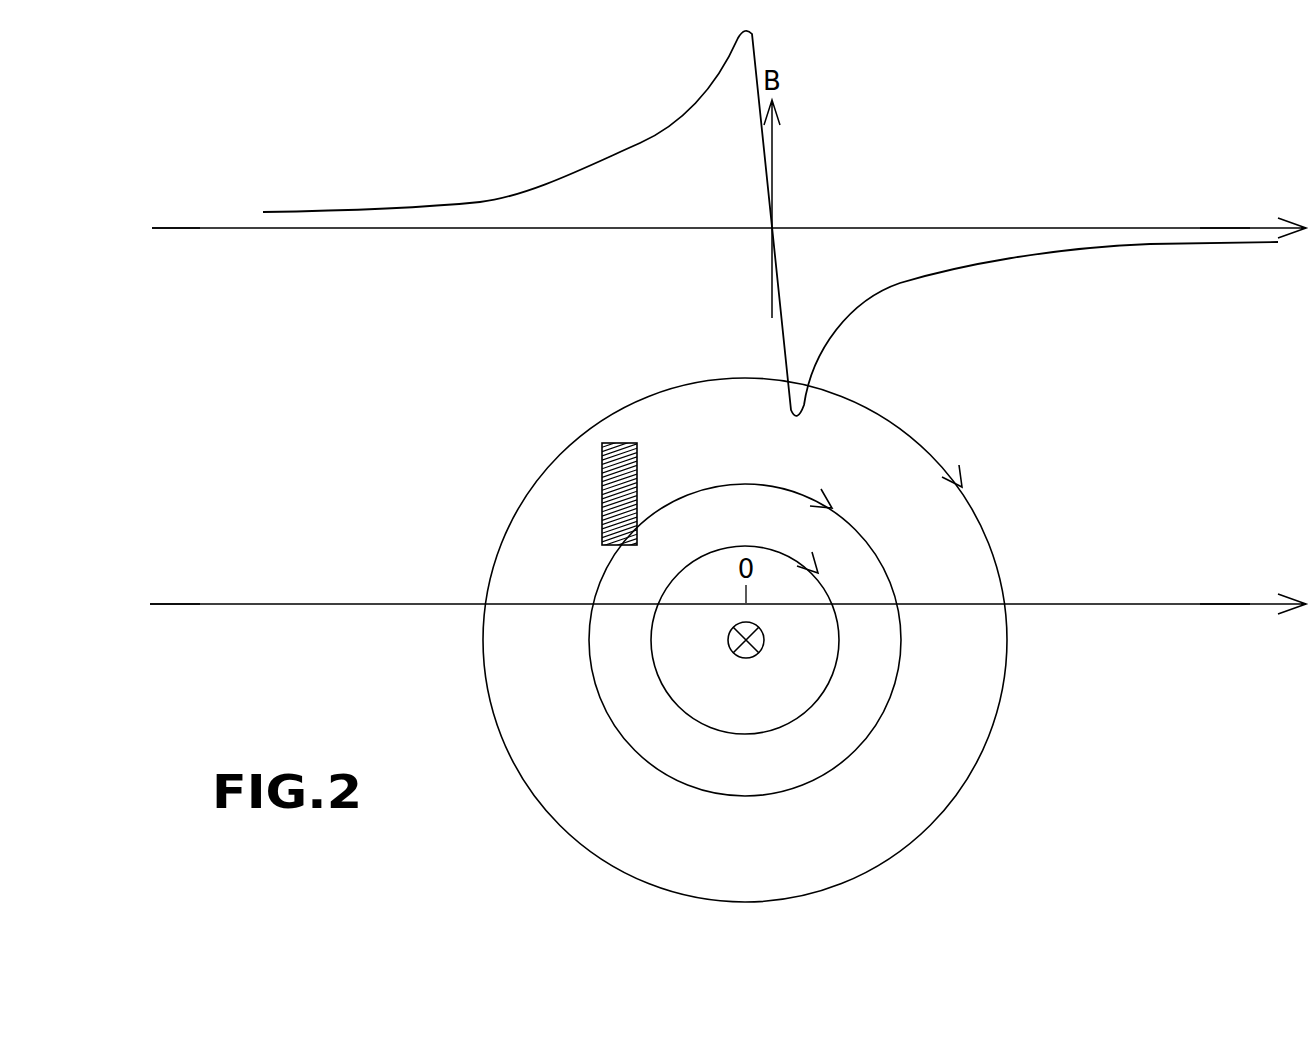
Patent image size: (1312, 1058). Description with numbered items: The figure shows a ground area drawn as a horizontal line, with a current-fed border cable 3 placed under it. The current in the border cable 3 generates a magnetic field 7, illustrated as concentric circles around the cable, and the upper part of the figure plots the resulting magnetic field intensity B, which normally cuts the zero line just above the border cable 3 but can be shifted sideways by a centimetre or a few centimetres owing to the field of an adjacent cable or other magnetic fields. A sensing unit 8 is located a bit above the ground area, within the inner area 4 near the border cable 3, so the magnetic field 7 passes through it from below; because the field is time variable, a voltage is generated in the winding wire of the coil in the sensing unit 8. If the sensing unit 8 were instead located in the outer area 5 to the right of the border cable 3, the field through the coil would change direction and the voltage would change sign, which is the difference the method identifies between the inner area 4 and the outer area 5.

The border cable 3 is at (763, 648).
The inner area 4 is at (384, 140).
The outer area 5 is at (1055, 143).
The magnetic field 7 is at (987, 540).
The sensing unit 8 is at (602, 506).